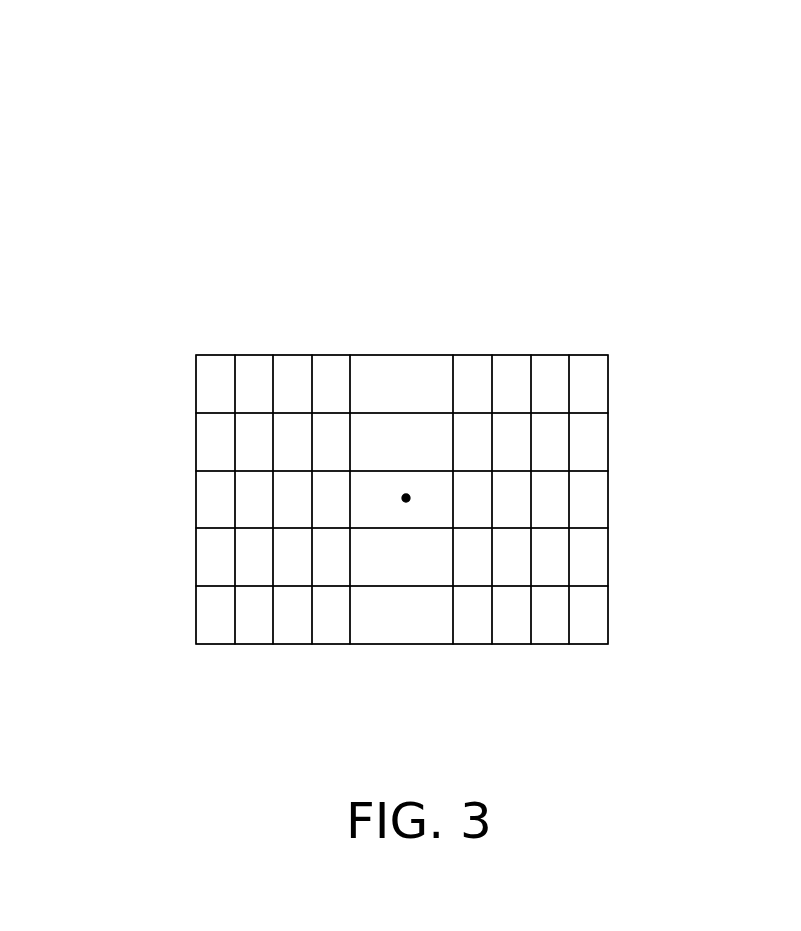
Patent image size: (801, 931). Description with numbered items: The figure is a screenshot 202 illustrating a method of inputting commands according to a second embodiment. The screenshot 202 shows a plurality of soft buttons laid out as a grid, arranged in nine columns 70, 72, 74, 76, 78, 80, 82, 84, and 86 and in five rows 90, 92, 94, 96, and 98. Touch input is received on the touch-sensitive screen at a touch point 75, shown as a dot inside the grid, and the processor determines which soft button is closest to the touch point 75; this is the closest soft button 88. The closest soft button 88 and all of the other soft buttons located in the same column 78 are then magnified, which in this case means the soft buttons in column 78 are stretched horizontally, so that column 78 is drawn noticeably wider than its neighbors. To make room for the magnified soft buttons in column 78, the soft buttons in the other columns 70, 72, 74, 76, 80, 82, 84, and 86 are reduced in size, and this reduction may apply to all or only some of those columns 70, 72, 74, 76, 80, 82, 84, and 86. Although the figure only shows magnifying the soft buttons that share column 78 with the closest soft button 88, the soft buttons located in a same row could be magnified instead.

The screenshot 202 is at (612, 148).
The column 70 is at (220, 331).
The column 72 is at (258, 331).
The column 74 is at (297, 331).
The column 76 is at (335, 331).
The column 78 is at (406, 331).
The column 80 is at (477, 331).
The column 82 is at (516, 331).
The column 84 is at (554, 331).
The column 86 is at (593, 331).
The row 90 is at (161, 386).
The row 92 is at (161, 449).
The row 94 is at (161, 507).
The row 96 is at (161, 571).
The row 98 is at (161, 622).
The touch point 75 is at (406, 502).
The closest soft button 88 is at (433, 497).